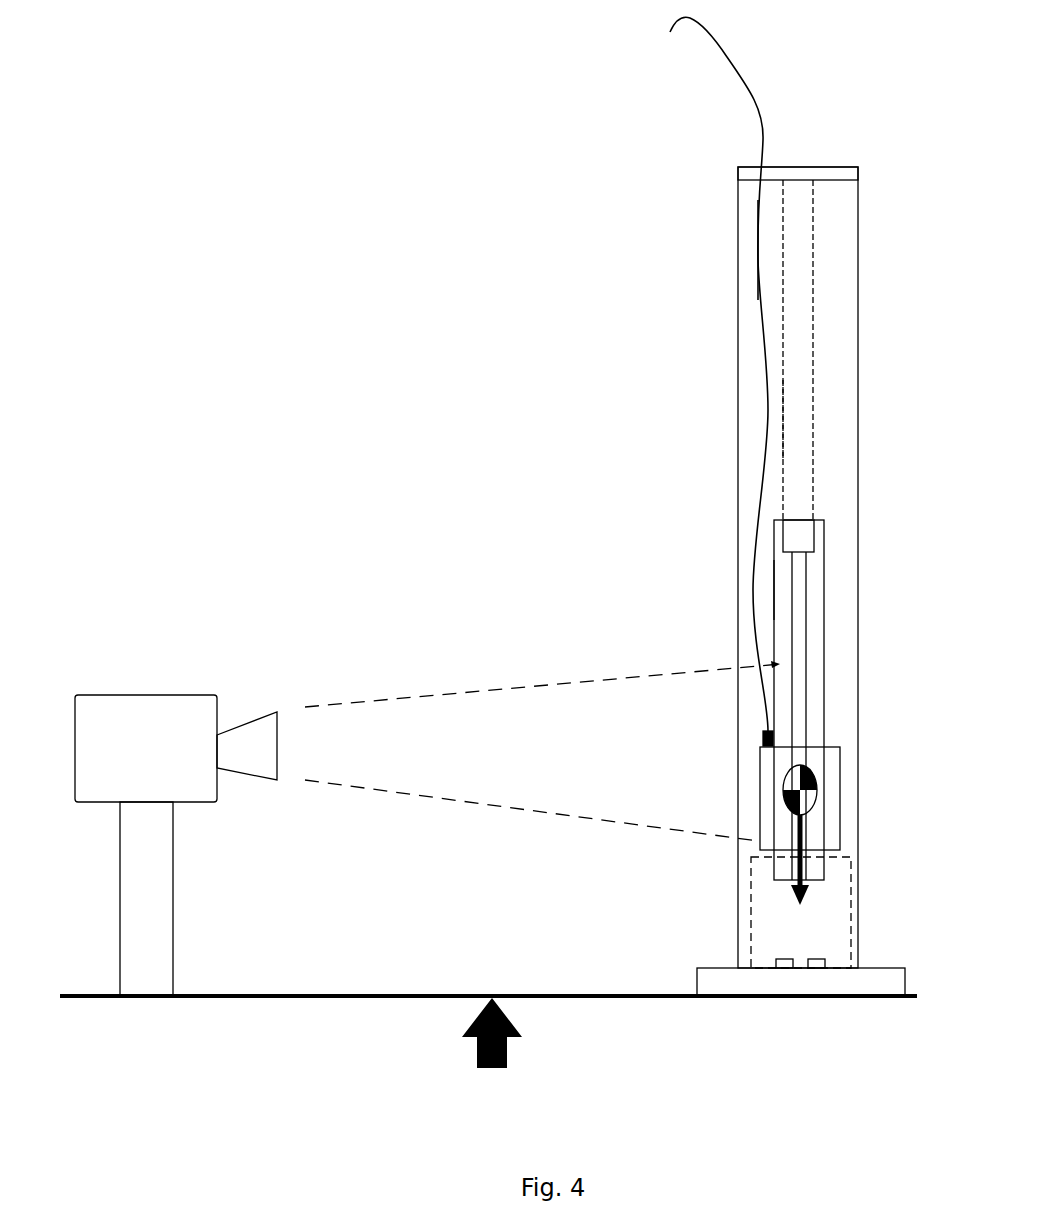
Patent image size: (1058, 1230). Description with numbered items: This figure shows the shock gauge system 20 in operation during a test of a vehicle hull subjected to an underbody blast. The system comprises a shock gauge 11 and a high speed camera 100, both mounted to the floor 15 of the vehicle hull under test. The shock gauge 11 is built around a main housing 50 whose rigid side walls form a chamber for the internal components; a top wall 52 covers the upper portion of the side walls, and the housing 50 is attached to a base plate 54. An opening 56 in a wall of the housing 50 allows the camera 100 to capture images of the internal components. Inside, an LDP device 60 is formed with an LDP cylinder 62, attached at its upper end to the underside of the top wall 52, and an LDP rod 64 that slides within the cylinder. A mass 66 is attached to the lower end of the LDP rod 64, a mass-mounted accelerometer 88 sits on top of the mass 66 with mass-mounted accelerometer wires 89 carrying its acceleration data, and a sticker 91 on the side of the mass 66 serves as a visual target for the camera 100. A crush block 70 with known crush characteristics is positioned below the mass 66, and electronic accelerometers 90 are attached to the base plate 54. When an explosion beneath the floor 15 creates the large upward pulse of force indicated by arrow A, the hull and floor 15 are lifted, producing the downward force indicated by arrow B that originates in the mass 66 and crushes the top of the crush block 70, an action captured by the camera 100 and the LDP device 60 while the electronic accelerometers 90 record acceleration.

The shock gauge 11 is at (760, 297).
The floor 15 is at (357, 996).
The shock gauge system 20 is at (232, 403).
The main housing 50 is at (843, 488).
The top wall 52 is at (827, 175).
The base plate 54 is at (877, 977).
The opening 56 is at (776, 596).
The LDP device 60 is at (768, 415).
The LDP cylinder 62 is at (803, 538).
The LDP rod 64 is at (798, 617).
The mass 66 is at (830, 765).
The crush block 70 is at (823, 905).
The mass-mounted accelerometer 88 is at (760, 743).
The mass-mounted accelerometer wires 89 is at (733, 57).
The electronic accelerometers 90 is at (810, 960).
The sticker 91 is at (818, 790).
The camera 100 is at (427, 828).
The arrow A is at (473, 1045).
The arrow B is at (795, 830).